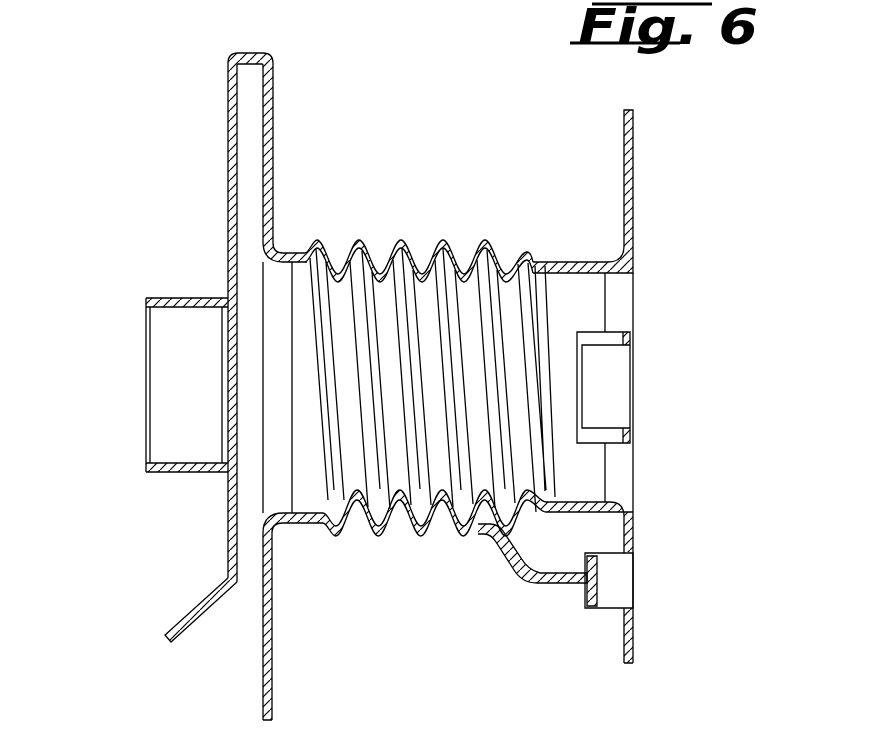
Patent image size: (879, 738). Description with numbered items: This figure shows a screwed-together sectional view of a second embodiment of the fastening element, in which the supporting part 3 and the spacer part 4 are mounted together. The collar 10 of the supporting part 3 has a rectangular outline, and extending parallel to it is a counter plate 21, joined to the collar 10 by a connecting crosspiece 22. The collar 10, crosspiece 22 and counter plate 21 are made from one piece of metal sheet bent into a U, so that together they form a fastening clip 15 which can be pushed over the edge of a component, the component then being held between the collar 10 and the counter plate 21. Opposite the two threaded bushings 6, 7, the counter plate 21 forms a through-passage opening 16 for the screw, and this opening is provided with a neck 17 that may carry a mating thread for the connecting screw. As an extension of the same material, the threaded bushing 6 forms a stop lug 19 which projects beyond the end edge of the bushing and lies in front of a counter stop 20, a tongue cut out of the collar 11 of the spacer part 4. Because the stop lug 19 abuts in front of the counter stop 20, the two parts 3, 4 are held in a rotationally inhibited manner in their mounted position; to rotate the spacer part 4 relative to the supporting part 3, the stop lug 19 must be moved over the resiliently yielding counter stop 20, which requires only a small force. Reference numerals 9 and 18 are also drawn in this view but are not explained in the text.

The supporting part 3 is at (356, 203).
The spacer part 4 is at (574, 225).
The threaded bushing 6 is at (443, 243).
The threaded bushing 7 is at (485, 243).
The sealing ring 9 is at (615, 387).
The collar 10 is at (272, 170).
The collar 11 is at (630, 175).
The fastening clip 15 is at (205, 98).
The through-passage opening 16 is at (168, 359).
The neck 17 is at (173, 305).
The tab 18 is at (203, 598).
The stop lug 19 is at (550, 580).
The counter stop 20 is at (620, 580).
The counter plate 21 is at (233, 163).
The connecting crosspiece 22 is at (253, 60).